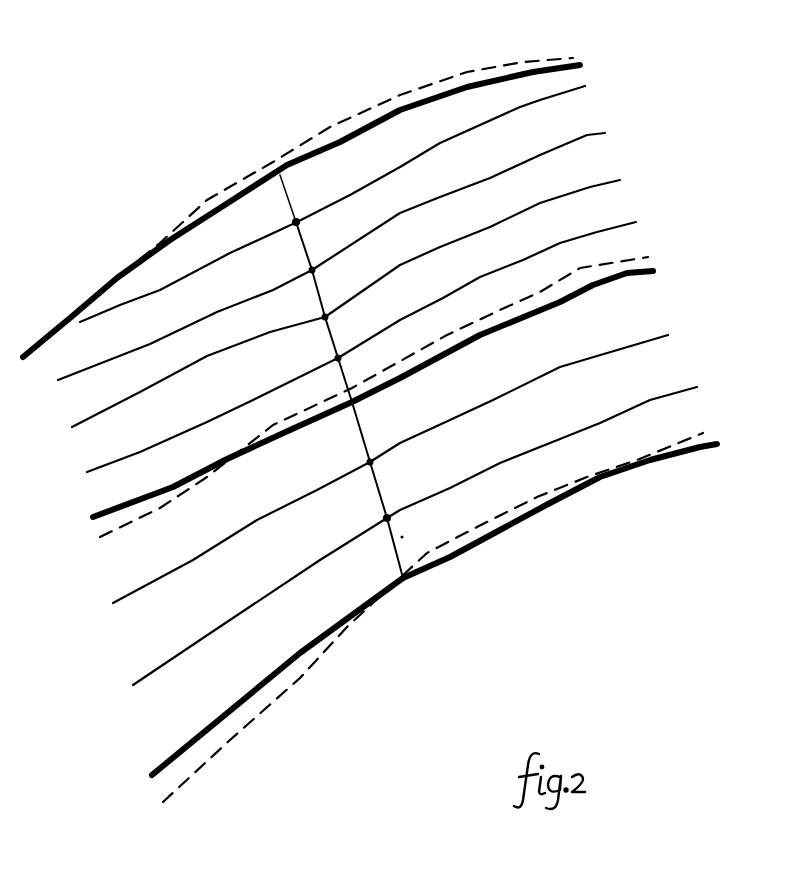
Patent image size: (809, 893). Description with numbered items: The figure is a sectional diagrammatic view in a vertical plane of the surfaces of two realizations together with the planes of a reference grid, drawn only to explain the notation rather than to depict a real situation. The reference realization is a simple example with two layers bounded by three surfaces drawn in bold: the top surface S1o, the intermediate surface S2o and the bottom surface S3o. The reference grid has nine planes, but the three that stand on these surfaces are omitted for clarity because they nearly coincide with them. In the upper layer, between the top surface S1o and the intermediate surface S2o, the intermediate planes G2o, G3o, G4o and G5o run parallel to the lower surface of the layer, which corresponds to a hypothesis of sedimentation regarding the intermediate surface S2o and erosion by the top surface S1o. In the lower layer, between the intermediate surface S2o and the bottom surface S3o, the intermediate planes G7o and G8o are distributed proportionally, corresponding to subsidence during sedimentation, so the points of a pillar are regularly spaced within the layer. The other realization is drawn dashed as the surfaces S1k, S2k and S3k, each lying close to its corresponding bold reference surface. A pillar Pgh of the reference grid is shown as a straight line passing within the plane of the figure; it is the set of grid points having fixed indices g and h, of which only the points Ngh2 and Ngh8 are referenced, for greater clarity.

The top surface of the reference realization S1o is at (580, 65).
The top surface of the other realization S1k is at (218, 190).
The intermediate plane of the reference grid G2o is at (585, 86).
The intermediate plane of the reference grid G3o is at (605, 133).
The intermediate plane of the reference grid G4o is at (620, 180).
The intermediate plane of the reference grid G5o is at (636, 222).
The intermediate surface of the reference realization S2o is at (653, 271).
The intermediate surface of the other realization S2k is at (104, 542).
The intermediate plane of the reference grid G7o is at (668, 335).
The intermediate plane of the reference grid G8o is at (697, 387).
The bottom surface of the reference realization S3o is at (717, 444).
The bottom surface of the other realization S3k is at (298, 673).
The point of the reference grid Ngh2 is at (296, 222).
The point of the reference grid Ngh8 is at (387, 518).
The pillar of the reference grid Pgh is at (401, 537).